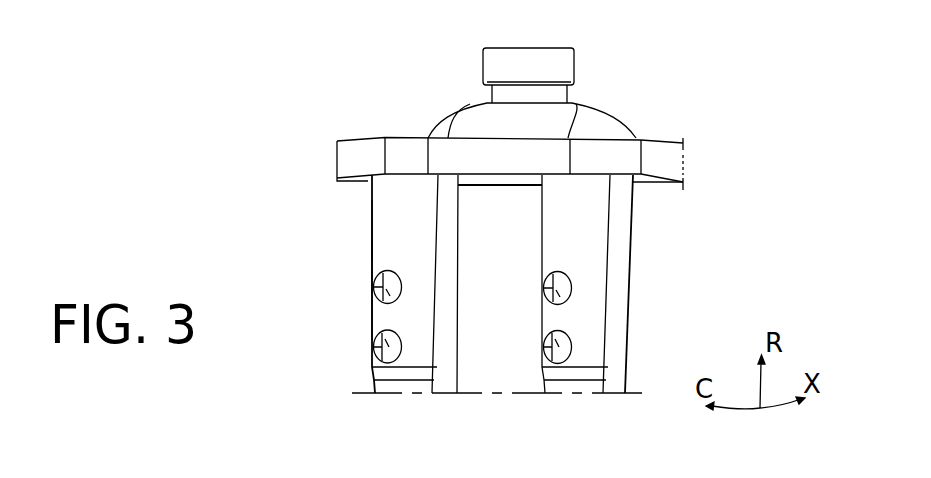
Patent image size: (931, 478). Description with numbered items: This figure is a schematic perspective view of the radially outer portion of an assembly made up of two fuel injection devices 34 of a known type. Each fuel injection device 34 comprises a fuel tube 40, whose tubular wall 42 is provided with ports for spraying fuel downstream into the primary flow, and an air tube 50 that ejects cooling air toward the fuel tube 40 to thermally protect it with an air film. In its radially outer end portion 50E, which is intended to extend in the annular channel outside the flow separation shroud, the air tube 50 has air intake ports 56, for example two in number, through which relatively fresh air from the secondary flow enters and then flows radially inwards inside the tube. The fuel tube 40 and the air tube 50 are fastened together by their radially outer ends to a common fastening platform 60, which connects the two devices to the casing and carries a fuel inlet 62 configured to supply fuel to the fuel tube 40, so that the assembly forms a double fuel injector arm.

The fuel injection device 34 is at (372, 226).
The fuel tube 40 is at (480, 284).
The tubular wall 42 is at (445, 303).
The air tube 50 is at (270, 235).
The radially outer end portion 50E is at (383, 250).
The air intake port 56 is at (375, 298).
The fastening platform 60 is at (420, 152).
The fuel inlet 62 is at (563, 65).